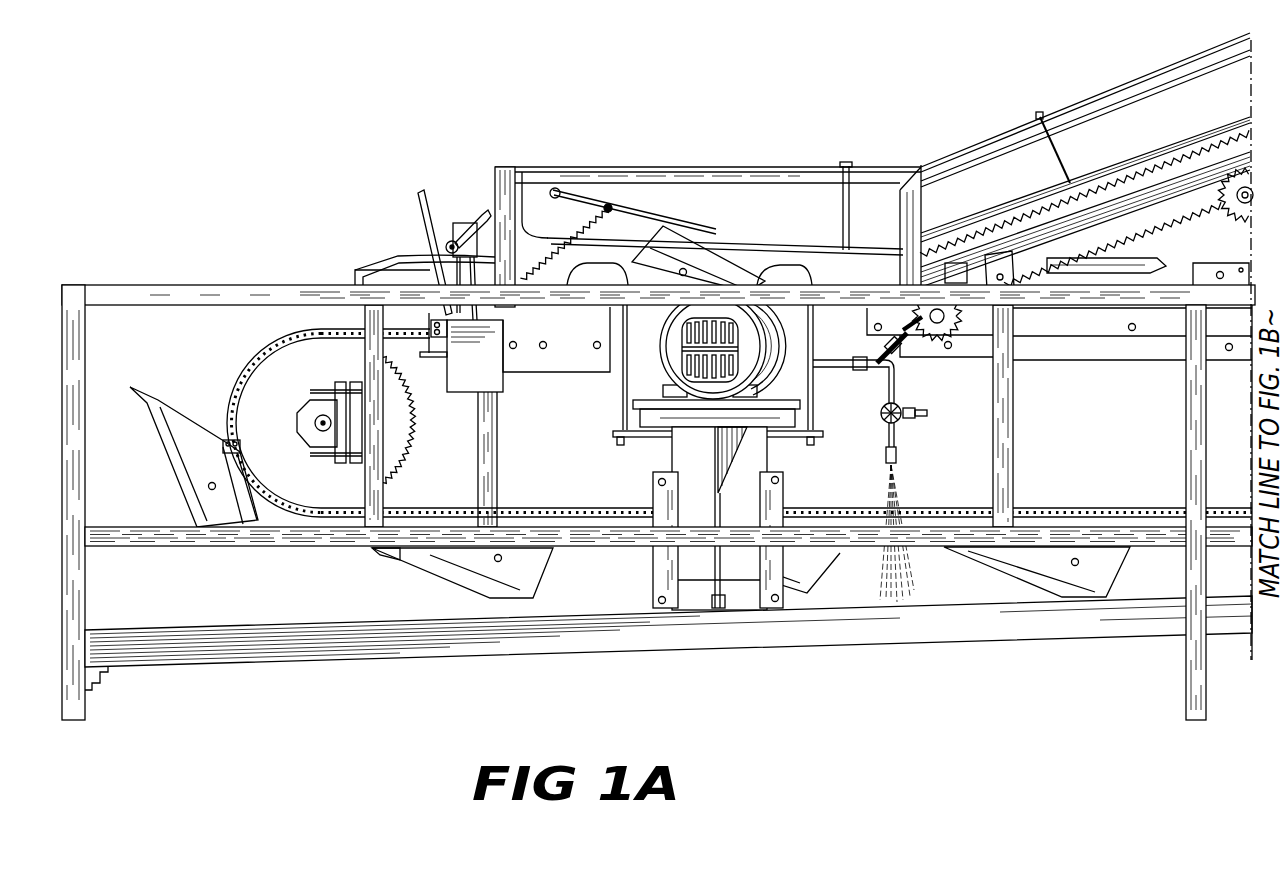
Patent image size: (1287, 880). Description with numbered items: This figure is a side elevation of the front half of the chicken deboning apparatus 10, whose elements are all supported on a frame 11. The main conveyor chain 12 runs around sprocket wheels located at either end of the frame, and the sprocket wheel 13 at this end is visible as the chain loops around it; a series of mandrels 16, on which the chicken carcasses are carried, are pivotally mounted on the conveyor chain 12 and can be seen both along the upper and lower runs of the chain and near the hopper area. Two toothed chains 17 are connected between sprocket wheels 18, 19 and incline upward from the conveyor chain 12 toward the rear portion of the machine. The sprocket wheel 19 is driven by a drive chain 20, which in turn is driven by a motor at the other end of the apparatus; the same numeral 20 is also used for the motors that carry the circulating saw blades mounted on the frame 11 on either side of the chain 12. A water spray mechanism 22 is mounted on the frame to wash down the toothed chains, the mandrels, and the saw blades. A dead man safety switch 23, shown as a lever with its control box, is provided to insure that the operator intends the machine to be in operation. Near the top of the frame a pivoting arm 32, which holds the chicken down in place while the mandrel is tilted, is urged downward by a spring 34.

The chicken deboning apparatus 10 is at (660, 112).
The frame 11 is at (192, 285).
The main conveyor chain 12 is at (528, 508).
The sprocket wheel 13 is at (276, 436).
The mandrel 16 is at (390, 258).
The toothed chain 17 is at (1027, 221).
The sprocket wheel 18 is at (965, 340).
The sprocket wheel 19 is at (670, 358).
The drive chain 20 is at (780, 378).
The water spray mechanism 22 is at (903, 345).
The dead man safety switch 23 is at (433, 190).
The pivoting arm 32 is at (665, 220).
The spring 34 is at (543, 185).